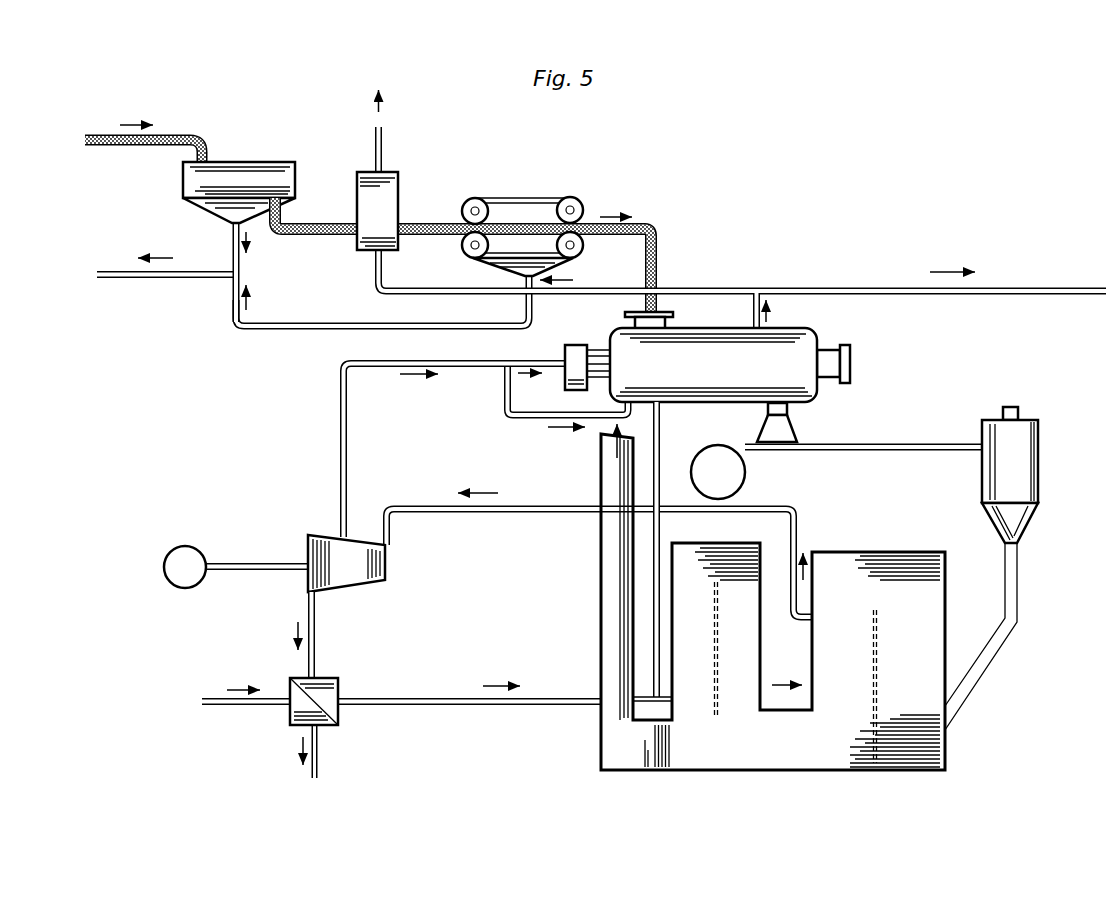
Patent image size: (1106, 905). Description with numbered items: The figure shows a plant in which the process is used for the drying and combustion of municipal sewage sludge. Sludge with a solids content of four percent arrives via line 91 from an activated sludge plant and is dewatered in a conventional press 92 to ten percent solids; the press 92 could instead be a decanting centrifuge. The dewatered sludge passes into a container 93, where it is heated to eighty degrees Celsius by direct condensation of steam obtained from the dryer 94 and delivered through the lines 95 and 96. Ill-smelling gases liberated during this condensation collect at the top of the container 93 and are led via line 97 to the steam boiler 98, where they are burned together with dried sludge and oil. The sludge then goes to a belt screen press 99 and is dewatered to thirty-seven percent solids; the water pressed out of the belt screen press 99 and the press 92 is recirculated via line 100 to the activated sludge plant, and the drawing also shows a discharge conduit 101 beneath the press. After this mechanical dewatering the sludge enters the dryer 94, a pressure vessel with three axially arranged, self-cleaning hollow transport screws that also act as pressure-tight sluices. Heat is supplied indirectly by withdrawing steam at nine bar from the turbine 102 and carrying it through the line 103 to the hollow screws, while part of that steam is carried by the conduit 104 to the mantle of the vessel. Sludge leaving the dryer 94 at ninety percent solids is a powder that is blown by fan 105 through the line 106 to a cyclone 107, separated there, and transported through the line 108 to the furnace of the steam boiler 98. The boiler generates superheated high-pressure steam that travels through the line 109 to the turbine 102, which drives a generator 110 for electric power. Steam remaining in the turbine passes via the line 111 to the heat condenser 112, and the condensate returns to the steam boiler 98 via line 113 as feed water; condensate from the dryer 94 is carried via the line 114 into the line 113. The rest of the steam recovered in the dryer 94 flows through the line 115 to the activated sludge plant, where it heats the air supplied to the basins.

The line 91 is at (105, 133).
The press 92 is at (236, 162).
The container 93 is at (400, 192).
The dryer 94 is at (776, 341).
The line 95 is at (753, 316).
The line 96 is at (585, 290).
The line 97 is at (383, 155).
The steam boiler 98 is at (893, 552).
The belt screen press 99 is at (503, 197).
The line 100 is at (132, 274).
The discharge conduit 101 is at (232, 247).
The turbine 102 is at (308, 556).
The line 103 is at (497, 362).
The conduit 104 is at (538, 418).
The fan 105 is at (718, 446).
The line 106 is at (855, 443).
The cyclone 107 is at (1040, 468).
The line 108 is at (1000, 651).
The line 109 is at (508, 507).
The generator 110 is at (168, 555).
The line 111 is at (315, 660).
The heat condenser 112 is at (338, 686).
The line 113 is at (430, 698).
The line 114 is at (659, 497).
The line 115 is at (929, 270).